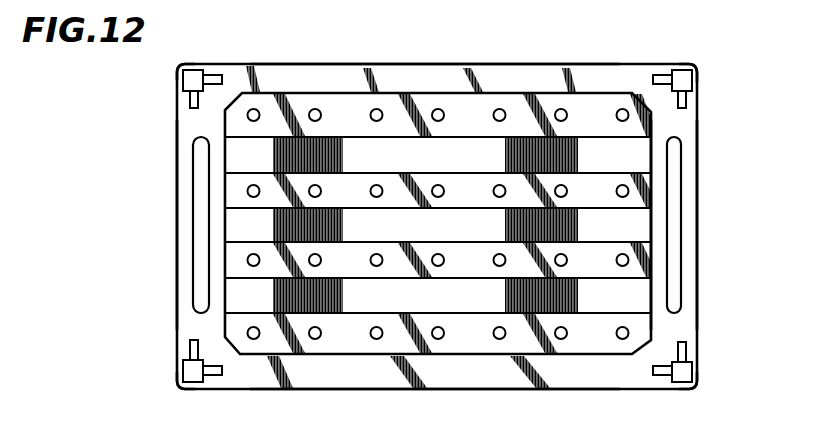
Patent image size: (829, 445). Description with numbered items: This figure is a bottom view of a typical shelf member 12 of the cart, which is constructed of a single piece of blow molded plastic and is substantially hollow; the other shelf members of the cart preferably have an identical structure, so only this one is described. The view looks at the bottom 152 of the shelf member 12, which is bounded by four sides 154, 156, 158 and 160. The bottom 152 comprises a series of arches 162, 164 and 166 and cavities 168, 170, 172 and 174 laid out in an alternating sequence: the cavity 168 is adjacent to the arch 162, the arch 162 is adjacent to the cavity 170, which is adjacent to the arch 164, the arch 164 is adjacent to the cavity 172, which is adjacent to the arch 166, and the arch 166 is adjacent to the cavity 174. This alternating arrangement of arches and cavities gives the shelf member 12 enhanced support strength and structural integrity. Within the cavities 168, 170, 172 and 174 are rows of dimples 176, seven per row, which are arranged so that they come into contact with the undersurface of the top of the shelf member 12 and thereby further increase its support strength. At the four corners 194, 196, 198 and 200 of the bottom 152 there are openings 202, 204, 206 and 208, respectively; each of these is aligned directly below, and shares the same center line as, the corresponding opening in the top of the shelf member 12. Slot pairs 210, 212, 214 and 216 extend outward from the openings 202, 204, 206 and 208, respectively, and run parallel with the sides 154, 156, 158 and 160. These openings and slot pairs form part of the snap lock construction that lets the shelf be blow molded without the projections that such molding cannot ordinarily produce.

The shelf member 12 is at (782, 33).
The bottom 152 is at (685, 123).
The side 154 is at (542, 65).
The side 156 is at (177, 170).
The side 158 is at (593, 390).
The side 160 is at (698, 193).
The arch 162 is at (633, 297).
The arch 164 is at (633, 225).
The arch 166 is at (643, 163).
The cavity 168 is at (240, 324).
The cavity 170 is at (240, 258).
The cavity 172 is at (240, 191).
The cavity 174 is at (242, 115).
The dimples 176 is at (254, 109).
The corner 194 is at (181, 56).
The corner 196 is at (178, 388).
The corner 198 is at (693, 386).
The corner 200 is at (693, 63).
The opening 202 is at (183, 80).
The opening 204 is at (187, 370).
The opening 206 is at (682, 383).
The opening 208 is at (690, 79).
The slot pair 210 is at (215, 75).
The slot pair 212 is at (212, 377).
The slot pair 214 is at (686, 352).
The slot pair 216 is at (665, 73).